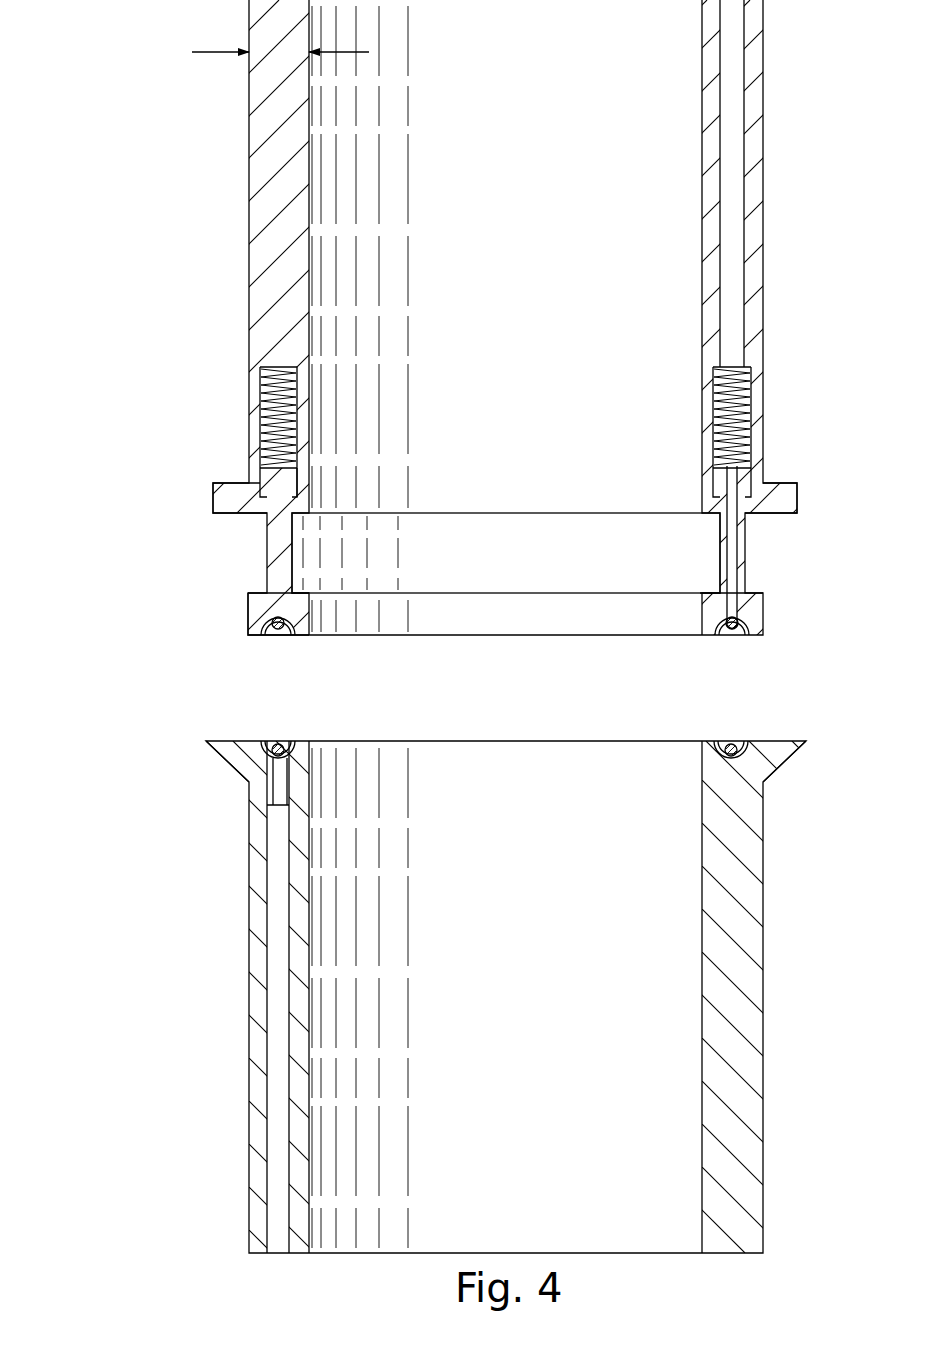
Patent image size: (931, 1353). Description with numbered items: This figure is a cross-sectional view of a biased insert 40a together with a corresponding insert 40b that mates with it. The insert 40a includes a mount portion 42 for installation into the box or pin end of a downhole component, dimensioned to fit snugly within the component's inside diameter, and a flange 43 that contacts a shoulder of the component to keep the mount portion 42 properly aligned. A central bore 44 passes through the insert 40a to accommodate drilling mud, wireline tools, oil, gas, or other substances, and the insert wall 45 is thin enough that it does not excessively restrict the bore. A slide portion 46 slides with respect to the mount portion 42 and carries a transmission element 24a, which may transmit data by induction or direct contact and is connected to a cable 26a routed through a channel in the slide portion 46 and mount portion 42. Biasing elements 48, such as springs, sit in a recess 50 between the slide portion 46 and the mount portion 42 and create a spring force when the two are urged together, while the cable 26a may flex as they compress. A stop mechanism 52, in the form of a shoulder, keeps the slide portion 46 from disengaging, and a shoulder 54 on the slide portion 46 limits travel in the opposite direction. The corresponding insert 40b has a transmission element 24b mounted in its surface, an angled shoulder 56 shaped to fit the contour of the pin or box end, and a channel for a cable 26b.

The insert 40a is at (143, 104).
The corresponding insert 40b is at (212, 926).
The mount portion 42 is at (262, 270).
The flange 43 is at (222, 502).
The central bore 44 is at (569, 86).
The insert wall 45 is at (205, 50).
The slide portion 46 is at (278, 552).
The biasing elements 48 is at (285, 395).
The recess 50 is at (298, 410).
The stop mechanism 52 is at (270, 480).
The shoulder 54 is at (255, 612).
The shoulder 56 is at (230, 763).
The transmission element 24a is at (270, 634).
The transmission element 24b is at (283, 752).
The cable 26a is at (733, 582).
The cable 26b is at (277, 795).